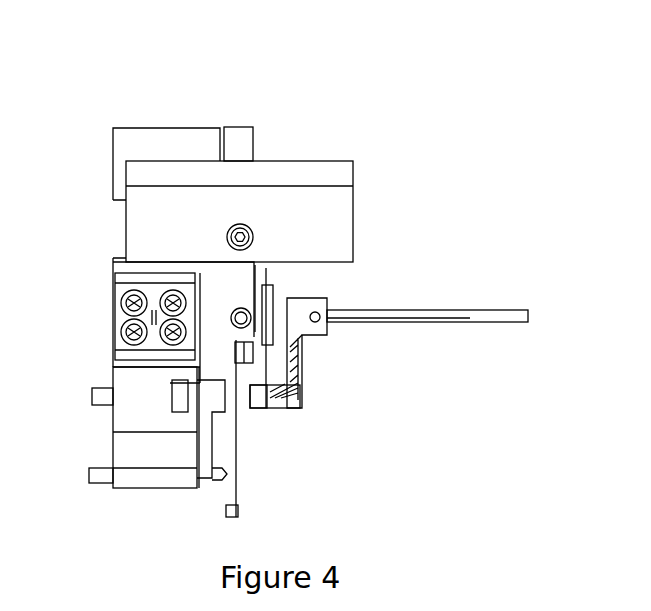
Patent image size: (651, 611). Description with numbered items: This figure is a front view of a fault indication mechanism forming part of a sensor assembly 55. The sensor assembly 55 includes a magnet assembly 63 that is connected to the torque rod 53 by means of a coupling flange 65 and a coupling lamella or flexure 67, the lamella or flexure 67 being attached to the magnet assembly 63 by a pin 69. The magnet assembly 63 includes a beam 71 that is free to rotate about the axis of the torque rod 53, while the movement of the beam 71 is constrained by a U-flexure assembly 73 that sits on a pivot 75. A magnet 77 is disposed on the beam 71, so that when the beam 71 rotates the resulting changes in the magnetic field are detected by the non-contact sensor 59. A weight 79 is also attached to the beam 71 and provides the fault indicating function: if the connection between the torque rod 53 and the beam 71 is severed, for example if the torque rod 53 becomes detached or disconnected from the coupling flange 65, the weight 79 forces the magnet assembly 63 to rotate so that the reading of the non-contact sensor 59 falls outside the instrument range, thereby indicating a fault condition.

The torque rod 53 is at (427, 310).
The sensor assembly 55 is at (202, 64).
The non-contact sensor 59 is at (187, 126).
The magnet assembly 63 is at (259, 62).
The coupling flange 65 is at (327, 333).
The coupling lamella or flexure 67 is at (268, 363).
The pin 69 is at (280, 298).
The beam 71 is at (253, 137).
The U-flexure assembly 73 is at (115, 320).
The pivot 75 is at (113, 435).
The magnet 77 is at (226, 126).
The weight 79 is at (353, 233).